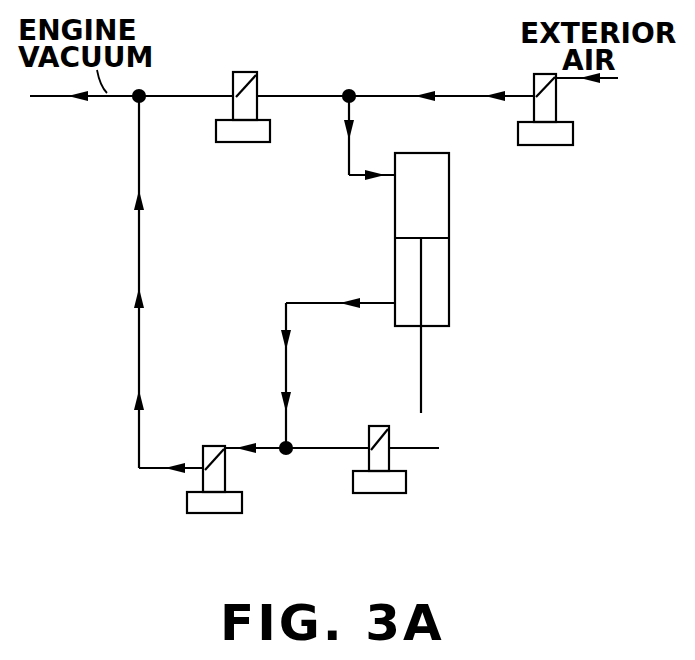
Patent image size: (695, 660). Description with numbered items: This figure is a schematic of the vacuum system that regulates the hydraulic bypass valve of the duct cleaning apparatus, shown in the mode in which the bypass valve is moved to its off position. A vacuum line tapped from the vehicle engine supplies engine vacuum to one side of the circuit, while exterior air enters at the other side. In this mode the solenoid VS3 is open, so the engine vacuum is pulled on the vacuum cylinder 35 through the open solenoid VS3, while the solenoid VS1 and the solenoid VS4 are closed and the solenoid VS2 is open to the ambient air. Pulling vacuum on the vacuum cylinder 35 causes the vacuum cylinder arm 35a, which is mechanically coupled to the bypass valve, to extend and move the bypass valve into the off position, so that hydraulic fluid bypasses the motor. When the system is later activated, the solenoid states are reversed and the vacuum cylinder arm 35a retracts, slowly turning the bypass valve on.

The solenoid VS1 is at (246, 134).
The solenoid VS2 is at (545, 135).
The solenoid VS3 is at (216, 505).
The solenoid VS4 is at (378, 485).
The vacuum cylinder 35 is at (449, 268).
The vacuum cylinder arm 35a is at (421, 395).